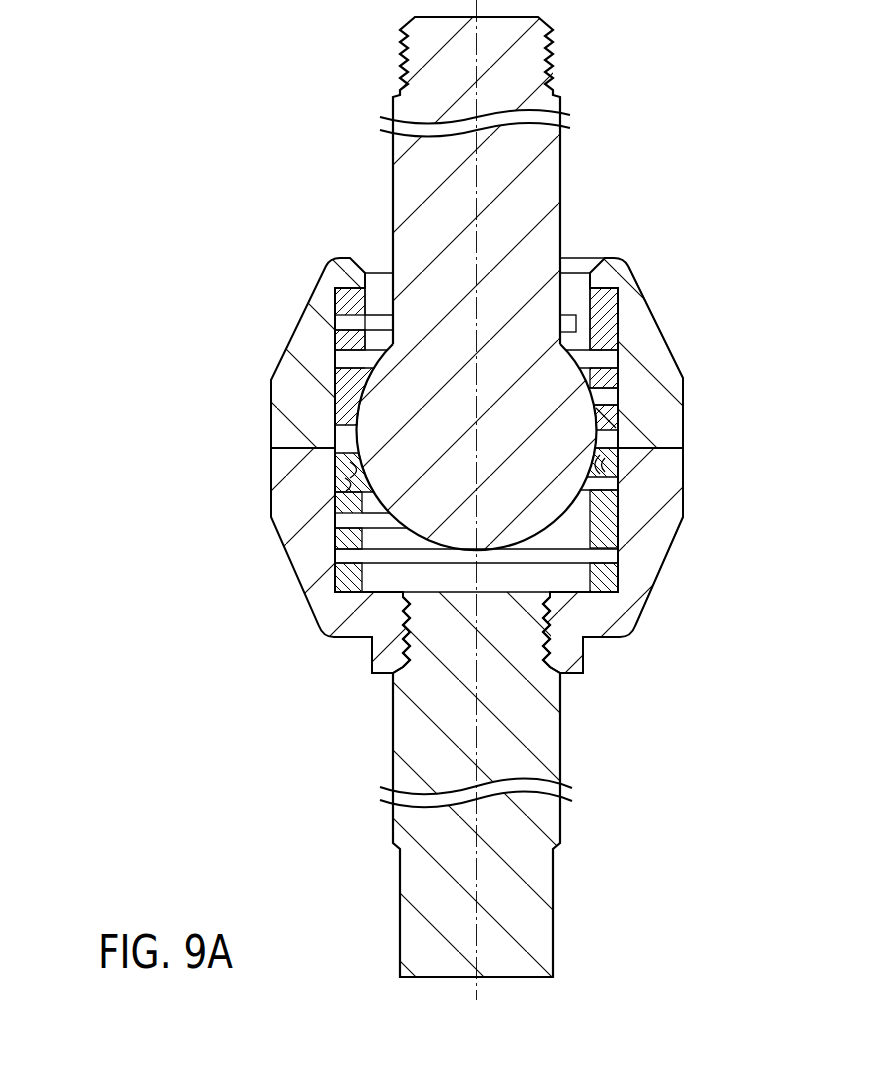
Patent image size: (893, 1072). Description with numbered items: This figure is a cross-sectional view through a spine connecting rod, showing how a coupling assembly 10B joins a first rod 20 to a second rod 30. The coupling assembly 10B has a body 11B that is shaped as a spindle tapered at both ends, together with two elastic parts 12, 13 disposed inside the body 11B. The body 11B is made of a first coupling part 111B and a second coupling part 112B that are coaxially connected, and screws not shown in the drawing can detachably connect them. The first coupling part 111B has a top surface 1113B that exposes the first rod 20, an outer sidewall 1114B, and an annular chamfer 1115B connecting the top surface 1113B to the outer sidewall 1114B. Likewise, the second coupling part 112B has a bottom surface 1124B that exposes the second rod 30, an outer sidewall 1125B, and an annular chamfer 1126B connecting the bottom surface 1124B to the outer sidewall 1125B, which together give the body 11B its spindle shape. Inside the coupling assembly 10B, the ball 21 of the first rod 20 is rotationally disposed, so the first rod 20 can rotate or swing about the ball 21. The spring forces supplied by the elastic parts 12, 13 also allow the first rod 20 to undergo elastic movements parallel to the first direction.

The coupling assembly 10B is at (98, 315).
The body 11B is at (165, 397).
The first coupling part 111B is at (268, 423).
The second coupling part 112B is at (268, 473).
The elastic part 12 is at (333, 343).
The elastic part 13 is at (333, 553).
The first rod 20 is at (390, 190).
The ball 21 is at (337, 592).
The second rod 30 is at (390, 757).
The top surface 1113B is at (610, 257).
The outer sidewall 1114B is at (685, 412).
The annular chamfer 1115B is at (658, 317).
The bottom surface 1124B is at (610, 640).
The outer sidewall 1125B is at (685, 480).
The annular chamfer 1126B is at (658, 572).